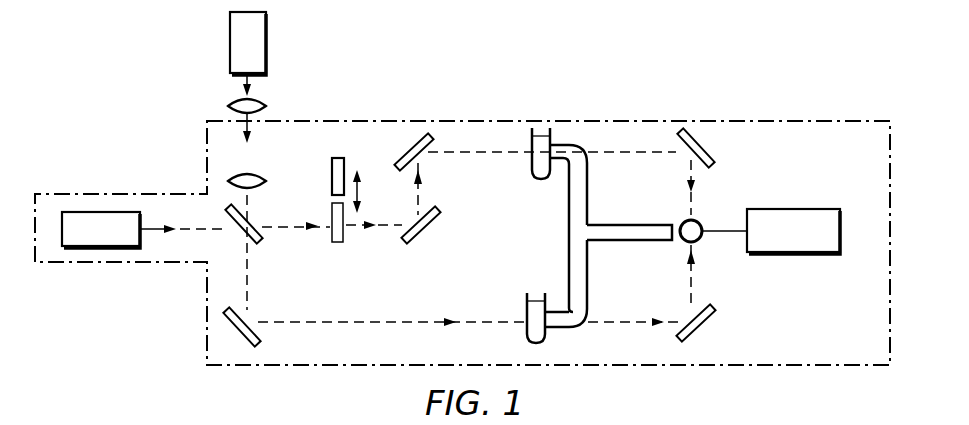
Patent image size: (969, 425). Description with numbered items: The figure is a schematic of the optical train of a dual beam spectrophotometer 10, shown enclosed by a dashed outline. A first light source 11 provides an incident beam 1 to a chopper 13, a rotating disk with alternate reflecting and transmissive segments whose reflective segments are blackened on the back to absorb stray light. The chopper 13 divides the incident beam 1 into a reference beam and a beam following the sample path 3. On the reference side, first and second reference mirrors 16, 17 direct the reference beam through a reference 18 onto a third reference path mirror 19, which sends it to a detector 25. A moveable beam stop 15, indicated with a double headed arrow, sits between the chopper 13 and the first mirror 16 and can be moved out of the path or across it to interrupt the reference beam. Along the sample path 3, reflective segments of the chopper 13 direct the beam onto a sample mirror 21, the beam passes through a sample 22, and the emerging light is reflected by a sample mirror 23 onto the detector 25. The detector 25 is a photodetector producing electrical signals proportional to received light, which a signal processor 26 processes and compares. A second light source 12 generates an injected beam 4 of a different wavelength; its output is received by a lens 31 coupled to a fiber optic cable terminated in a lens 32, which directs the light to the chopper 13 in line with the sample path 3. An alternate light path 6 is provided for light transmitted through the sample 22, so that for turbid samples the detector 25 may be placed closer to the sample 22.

The dual beam spectrophotometer 10 is at (798, 104).
The first light source 11 is at (130, 212).
The second light source 12 is at (268, 32).
The injected beam 4 is at (242, 84).
The lens 31 is at (266, 102).
The lens 32 is at (266, 178).
The chopper 13 is at (258, 238).
The incident beam 1 is at (188, 230).
The moveable beam stop 15 is at (344, 166).
The first reference mirror 16 is at (432, 232).
The second reference mirror 17 is at (408, 158).
The reference 18 is at (531, 158).
The sample 22 is at (527, 326).
The alternate light path 6 is at (634, 241).
The third reference path mirror 19 is at (712, 160).
The sample mirror 21 is at (258, 342).
The sample mirror 23 is at (712, 316).
The sample path 3 is at (340, 322).
The detector 25 is at (700, 240).
The signal processor 26 is at (836, 200).